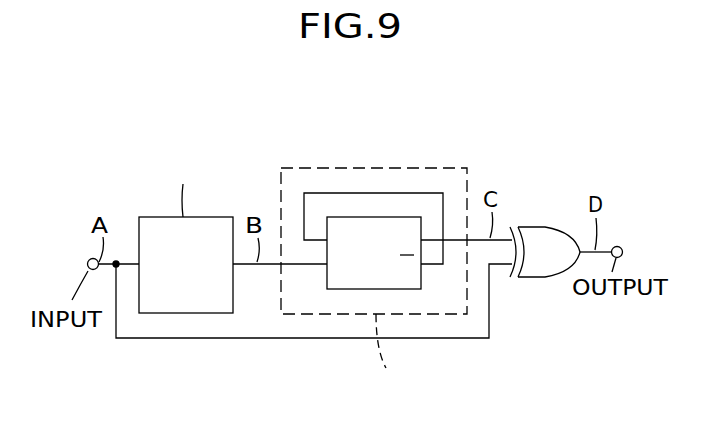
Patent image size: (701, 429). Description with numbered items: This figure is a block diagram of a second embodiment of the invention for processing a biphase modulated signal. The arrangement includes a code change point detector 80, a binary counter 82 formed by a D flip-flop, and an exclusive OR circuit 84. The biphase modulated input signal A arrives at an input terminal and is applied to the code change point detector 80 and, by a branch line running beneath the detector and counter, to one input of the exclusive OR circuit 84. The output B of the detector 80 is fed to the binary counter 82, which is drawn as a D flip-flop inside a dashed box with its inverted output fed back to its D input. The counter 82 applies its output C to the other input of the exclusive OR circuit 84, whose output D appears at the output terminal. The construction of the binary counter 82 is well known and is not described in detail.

The code change point detector 80 is at (139, 217).
The binary counter 82 is at (392, 168).
The exclusive OR circuit 84 is at (545, 227).